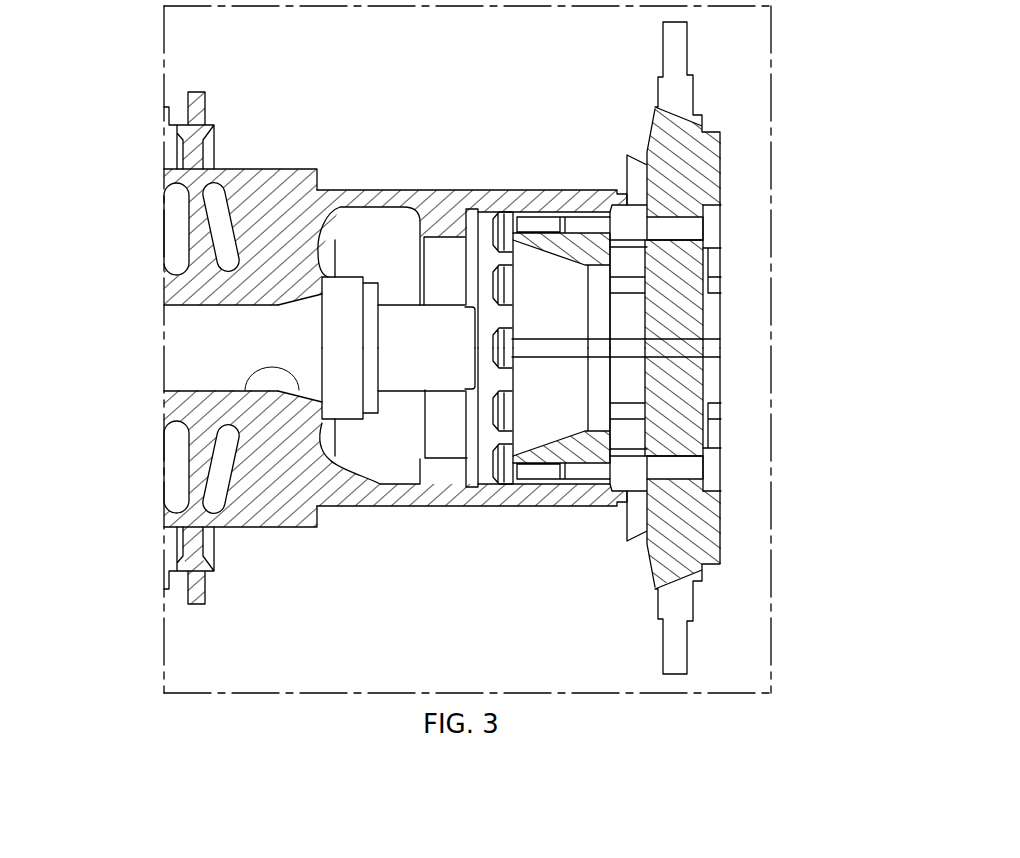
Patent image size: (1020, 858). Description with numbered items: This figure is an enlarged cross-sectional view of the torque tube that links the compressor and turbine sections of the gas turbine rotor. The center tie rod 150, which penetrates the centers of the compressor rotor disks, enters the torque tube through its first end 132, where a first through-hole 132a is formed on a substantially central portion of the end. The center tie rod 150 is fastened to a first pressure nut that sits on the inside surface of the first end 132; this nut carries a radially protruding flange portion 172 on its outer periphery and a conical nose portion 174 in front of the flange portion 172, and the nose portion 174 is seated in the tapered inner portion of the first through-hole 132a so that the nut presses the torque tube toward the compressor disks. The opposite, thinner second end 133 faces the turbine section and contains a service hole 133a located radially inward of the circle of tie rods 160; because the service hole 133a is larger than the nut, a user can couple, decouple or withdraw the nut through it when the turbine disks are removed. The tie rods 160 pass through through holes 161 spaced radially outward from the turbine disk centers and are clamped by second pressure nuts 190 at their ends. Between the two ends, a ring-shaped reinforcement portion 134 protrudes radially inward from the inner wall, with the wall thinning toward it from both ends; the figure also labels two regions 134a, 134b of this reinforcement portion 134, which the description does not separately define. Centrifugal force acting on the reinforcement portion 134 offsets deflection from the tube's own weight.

The first end 132 is at (259, 192).
The first through-hole 132a is at (246, 400).
The second end 133 is at (598, 200).
The service hole 133a is at (550, 403).
The reinforcement portion 134 is at (452, 222).
The seal cavity of bearing housing 134a is at (366, 225).
The mounting face of bearing housing 134b is at (499, 211).
The center tie rod 150 is at (190, 333).
The tie rods 160 is at (690, 226).
The through holes 161 is at (672, 218).
The flange portion 172 is at (337, 290).
The nose portion 174 is at (302, 355).
The second pressure nuts 190 is at (503, 222).